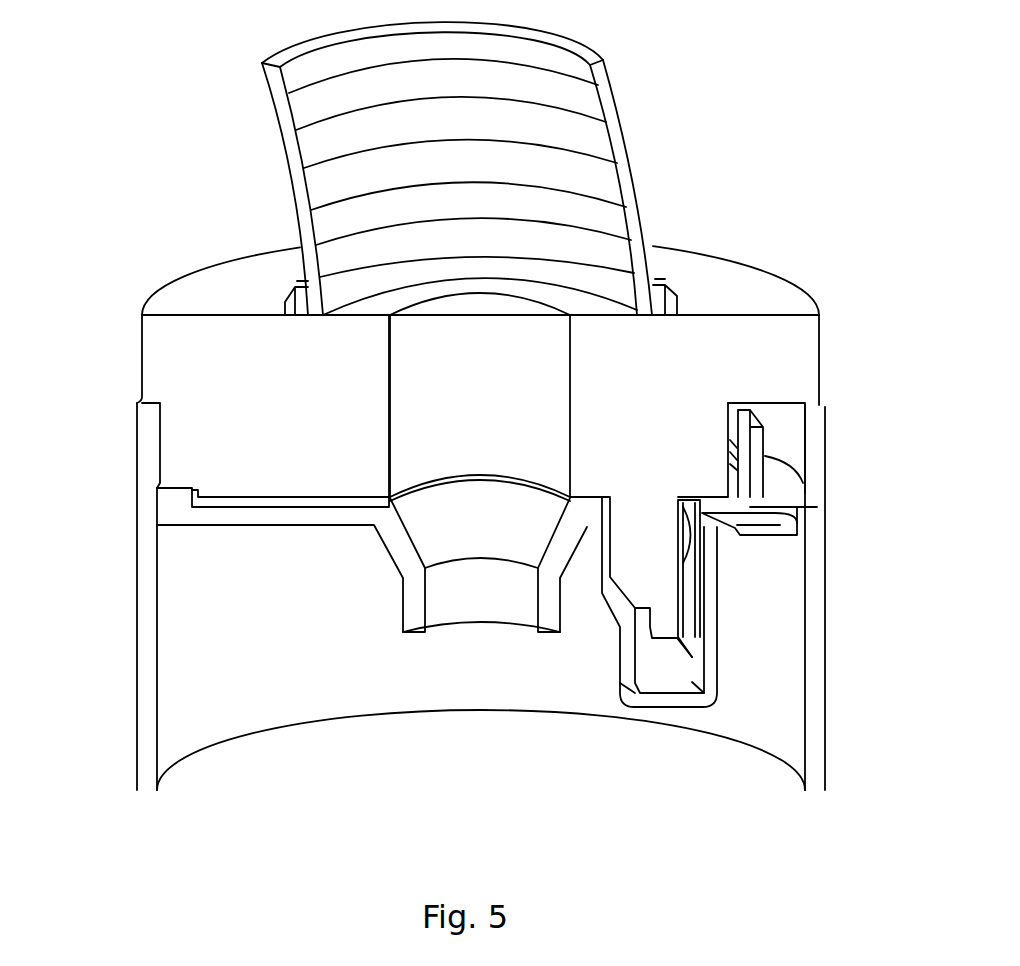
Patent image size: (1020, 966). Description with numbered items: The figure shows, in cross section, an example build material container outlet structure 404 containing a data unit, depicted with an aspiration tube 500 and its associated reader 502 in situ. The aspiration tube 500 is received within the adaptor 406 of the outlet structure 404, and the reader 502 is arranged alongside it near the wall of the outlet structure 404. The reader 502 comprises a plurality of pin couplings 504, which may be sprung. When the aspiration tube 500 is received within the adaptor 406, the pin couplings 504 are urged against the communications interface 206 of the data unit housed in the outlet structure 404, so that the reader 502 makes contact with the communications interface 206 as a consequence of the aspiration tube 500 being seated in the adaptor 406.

The aspiration tube 500 is at (293, 135).
The outlet structure 404 is at (818, 407).
The adaptor 406 is at (155, 476).
The reader 502 is at (664, 573).
The communications interface 206 is at (800, 524).
The pin coupling 504 is at (687, 538).